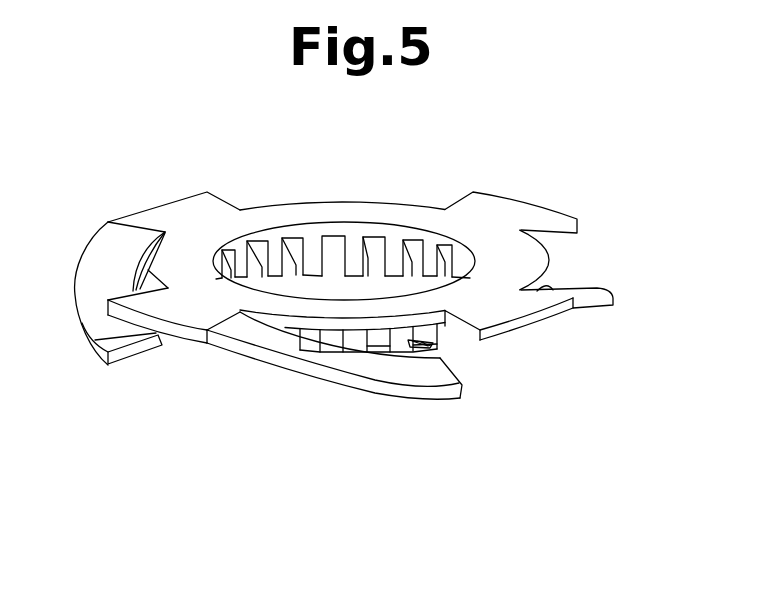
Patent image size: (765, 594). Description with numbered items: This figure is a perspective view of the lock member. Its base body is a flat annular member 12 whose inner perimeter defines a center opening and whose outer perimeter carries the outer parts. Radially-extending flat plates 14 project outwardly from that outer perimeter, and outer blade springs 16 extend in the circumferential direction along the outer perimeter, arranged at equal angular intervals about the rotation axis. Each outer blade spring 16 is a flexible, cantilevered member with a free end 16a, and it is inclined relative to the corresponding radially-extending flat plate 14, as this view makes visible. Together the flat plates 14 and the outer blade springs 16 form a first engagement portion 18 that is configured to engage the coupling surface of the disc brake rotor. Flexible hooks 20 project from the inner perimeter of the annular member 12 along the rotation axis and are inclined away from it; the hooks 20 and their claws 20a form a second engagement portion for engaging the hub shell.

The annular member 12 is at (328, 207).
The radially-extending flat plate 14 is at (178, 333).
The outer blade spring 16 is at (337, 391).
The free end 16a is at (450, 400).
The first engagement portion 18 is at (287, 412).
The flexible hook 20 is at (423, 327).
The claw 20a is at (433, 344).